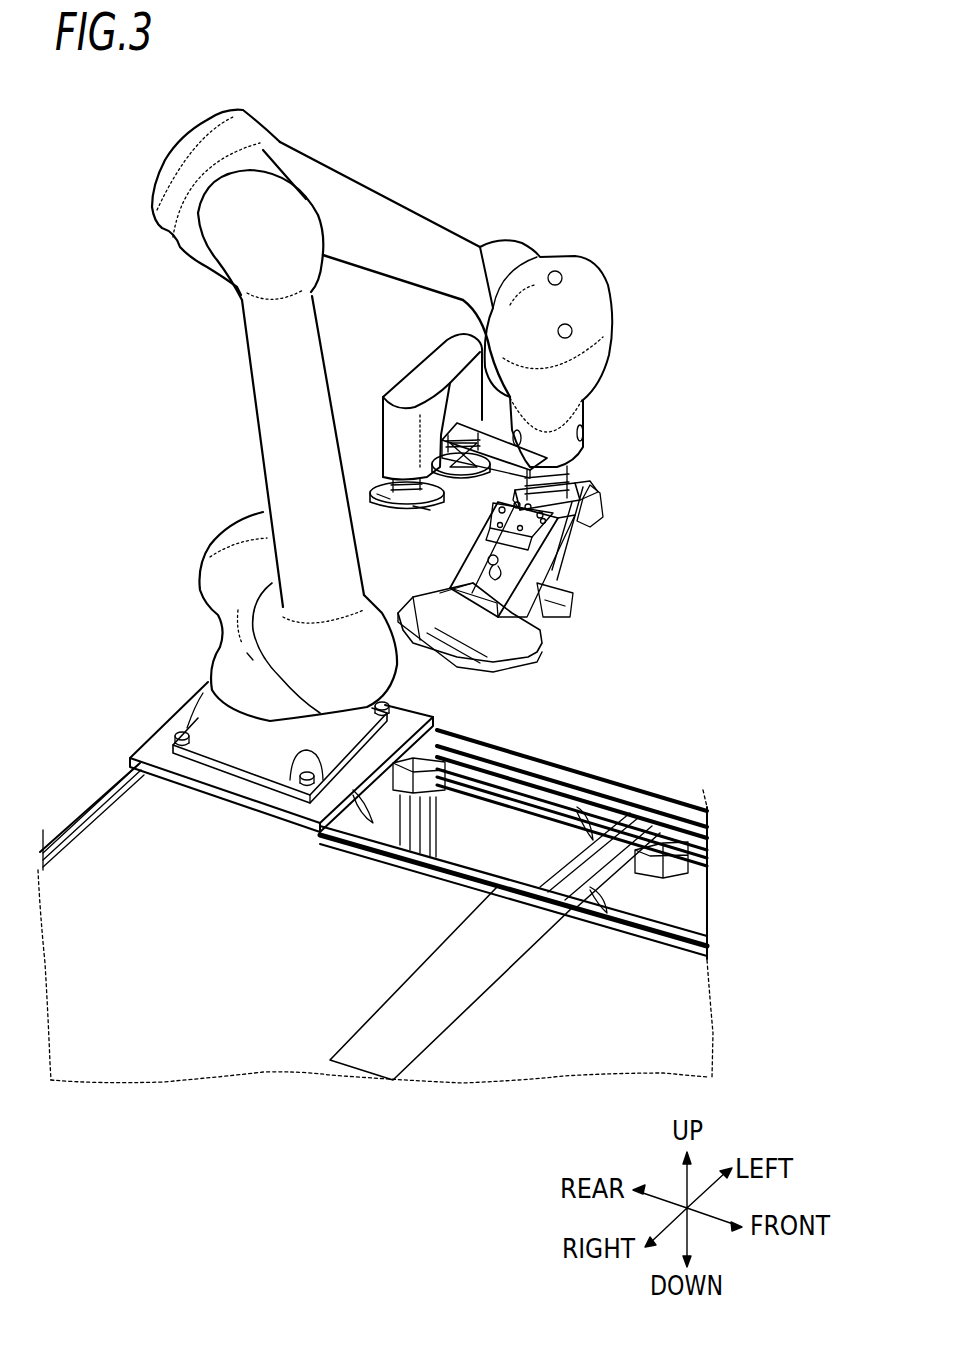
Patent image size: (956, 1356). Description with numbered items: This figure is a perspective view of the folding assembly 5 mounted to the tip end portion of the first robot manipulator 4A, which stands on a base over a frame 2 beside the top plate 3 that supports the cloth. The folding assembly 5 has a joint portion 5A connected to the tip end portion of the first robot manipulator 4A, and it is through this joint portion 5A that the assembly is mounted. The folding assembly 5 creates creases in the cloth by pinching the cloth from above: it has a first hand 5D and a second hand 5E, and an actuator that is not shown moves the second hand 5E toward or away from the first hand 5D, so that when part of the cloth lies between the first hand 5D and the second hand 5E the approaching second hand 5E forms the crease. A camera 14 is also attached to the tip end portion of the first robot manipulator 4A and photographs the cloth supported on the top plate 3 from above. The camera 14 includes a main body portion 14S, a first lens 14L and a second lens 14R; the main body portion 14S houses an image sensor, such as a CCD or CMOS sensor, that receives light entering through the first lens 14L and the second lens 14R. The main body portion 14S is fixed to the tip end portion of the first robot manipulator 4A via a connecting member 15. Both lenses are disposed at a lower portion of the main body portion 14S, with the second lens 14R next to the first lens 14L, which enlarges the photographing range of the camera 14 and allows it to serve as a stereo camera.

The frame 2 is at (557, 763).
The top plate 3 is at (98, 852).
The first robot manipulator 4A is at (258, 445).
The folding assembly 5 is at (543, 576).
The joint portion 5A is at (590, 488).
The first hand 5D is at (532, 635).
The second hand 5E is at (535, 655).
The camera 14 is at (330, 292).
The main body portion 14S is at (400, 383).
The first lens 14L is at (453, 452).
The second lens 14R is at (392, 490).
The connecting member 15 is at (500, 420).